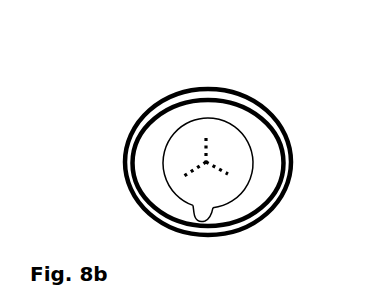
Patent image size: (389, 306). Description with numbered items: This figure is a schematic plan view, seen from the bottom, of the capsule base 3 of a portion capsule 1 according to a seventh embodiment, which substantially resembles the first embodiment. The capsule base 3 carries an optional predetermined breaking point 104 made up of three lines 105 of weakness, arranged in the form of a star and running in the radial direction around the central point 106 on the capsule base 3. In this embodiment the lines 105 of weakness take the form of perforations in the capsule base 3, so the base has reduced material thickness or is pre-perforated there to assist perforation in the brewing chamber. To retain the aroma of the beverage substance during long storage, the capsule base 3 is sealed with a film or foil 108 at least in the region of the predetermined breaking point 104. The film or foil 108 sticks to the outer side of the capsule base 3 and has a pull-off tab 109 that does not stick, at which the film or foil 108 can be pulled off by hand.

The portion capsule 1 is at (156, 90).
The capsule base 3 is at (250, 131).
The predetermined breaking point 104 is at (190, 154).
The lines of weakness 105 is at (217, 167).
The central point 106 is at (206, 163).
The film or foil 108 is at (173, 132).
The pull-off tab 109 is at (213, 213).